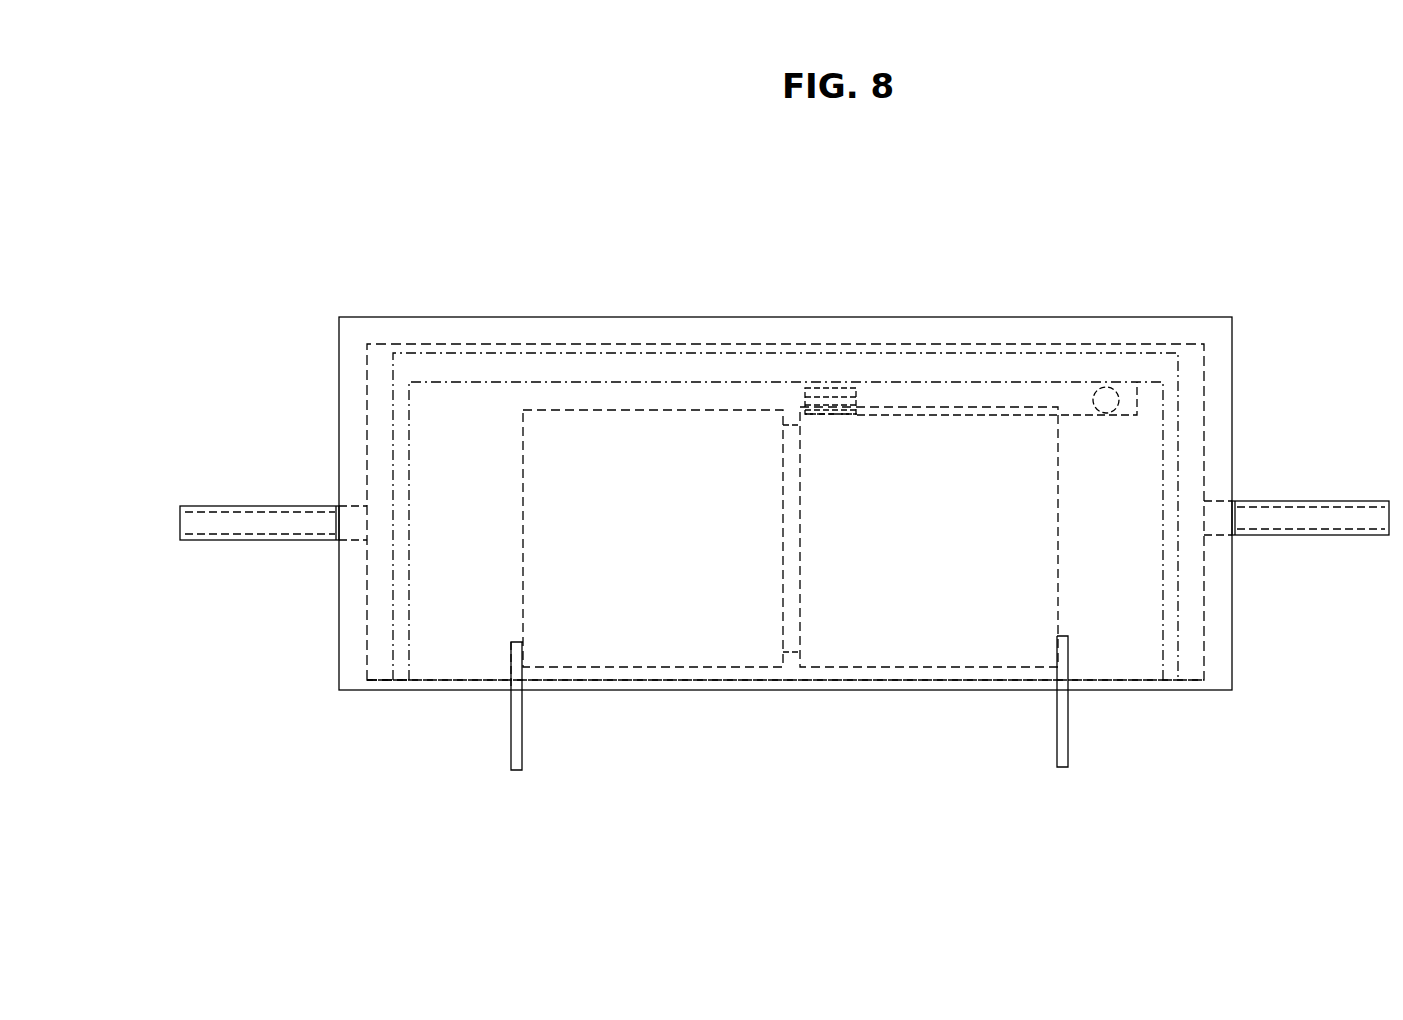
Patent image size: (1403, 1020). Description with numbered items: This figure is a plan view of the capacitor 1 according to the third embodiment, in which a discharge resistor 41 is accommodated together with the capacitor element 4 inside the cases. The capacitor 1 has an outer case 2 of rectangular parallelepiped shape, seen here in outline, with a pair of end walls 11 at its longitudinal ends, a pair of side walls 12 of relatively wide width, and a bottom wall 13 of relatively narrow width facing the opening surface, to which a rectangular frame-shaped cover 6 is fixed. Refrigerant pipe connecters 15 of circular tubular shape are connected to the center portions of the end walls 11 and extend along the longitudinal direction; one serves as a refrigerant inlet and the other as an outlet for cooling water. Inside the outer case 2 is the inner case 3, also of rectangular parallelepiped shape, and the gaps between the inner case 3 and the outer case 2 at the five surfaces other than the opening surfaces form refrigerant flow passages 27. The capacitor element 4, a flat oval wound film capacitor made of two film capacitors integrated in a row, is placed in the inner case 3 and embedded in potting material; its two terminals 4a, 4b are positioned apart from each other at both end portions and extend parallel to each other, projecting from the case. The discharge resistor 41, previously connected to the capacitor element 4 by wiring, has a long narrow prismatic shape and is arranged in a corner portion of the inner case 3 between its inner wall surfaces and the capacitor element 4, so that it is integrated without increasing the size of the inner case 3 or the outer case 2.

The capacitor 1 is at (1047, 281).
The outer case 2 is at (788, 315).
The inner case 3 is at (391, 588).
The capacitor element 4 is at (757, 669).
The terminal 4a is at (522, 730).
The terminal 4b is at (1068, 737).
The cover 6 is at (380, 692).
The end wall 11 is at (337, 636).
The side wall 12 is at (1138, 372).
The bottom wall 13 is at (607, 317).
The refrigerant pipe connecter 15 is at (247, 520).
The refrigerant flow passage 27 is at (366, 422).
The discharge resistor 41 is at (1138, 398).